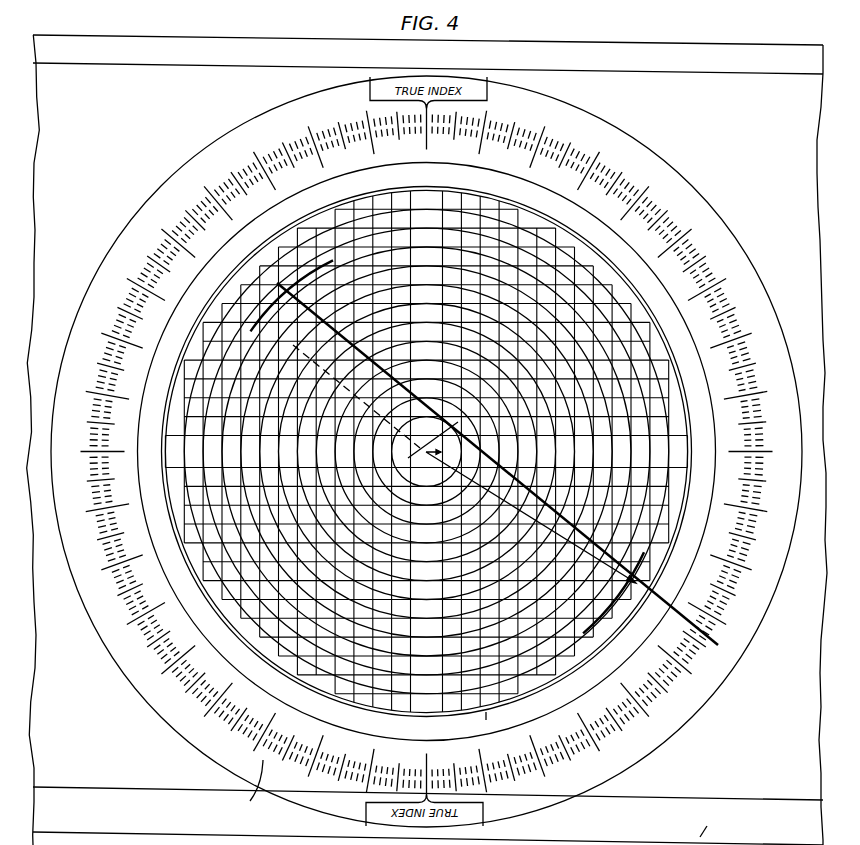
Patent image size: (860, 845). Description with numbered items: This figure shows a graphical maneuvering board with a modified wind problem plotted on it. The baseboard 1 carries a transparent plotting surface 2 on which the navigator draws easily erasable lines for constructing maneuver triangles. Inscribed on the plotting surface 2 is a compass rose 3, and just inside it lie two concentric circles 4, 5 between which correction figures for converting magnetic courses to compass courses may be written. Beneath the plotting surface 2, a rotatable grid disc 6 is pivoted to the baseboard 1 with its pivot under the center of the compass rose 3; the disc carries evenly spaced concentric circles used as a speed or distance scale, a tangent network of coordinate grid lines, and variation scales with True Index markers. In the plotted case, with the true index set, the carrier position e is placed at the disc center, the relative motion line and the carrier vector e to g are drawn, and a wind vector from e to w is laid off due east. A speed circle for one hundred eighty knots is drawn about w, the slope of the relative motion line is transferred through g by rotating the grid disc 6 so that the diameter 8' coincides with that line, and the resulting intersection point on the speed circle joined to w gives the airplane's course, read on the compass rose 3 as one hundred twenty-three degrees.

The baseboard 1 is at (298, 630).
The plotting surface 2 is at (752, 787).
The compass rose 3 is at (718, 641).
The concentric circle 4 is at (710, 543).
The concentric circle 5 is at (703, 583).
The rotatable grid disc 6 is at (328, 808).
The diameter 8' is at (337, 446).